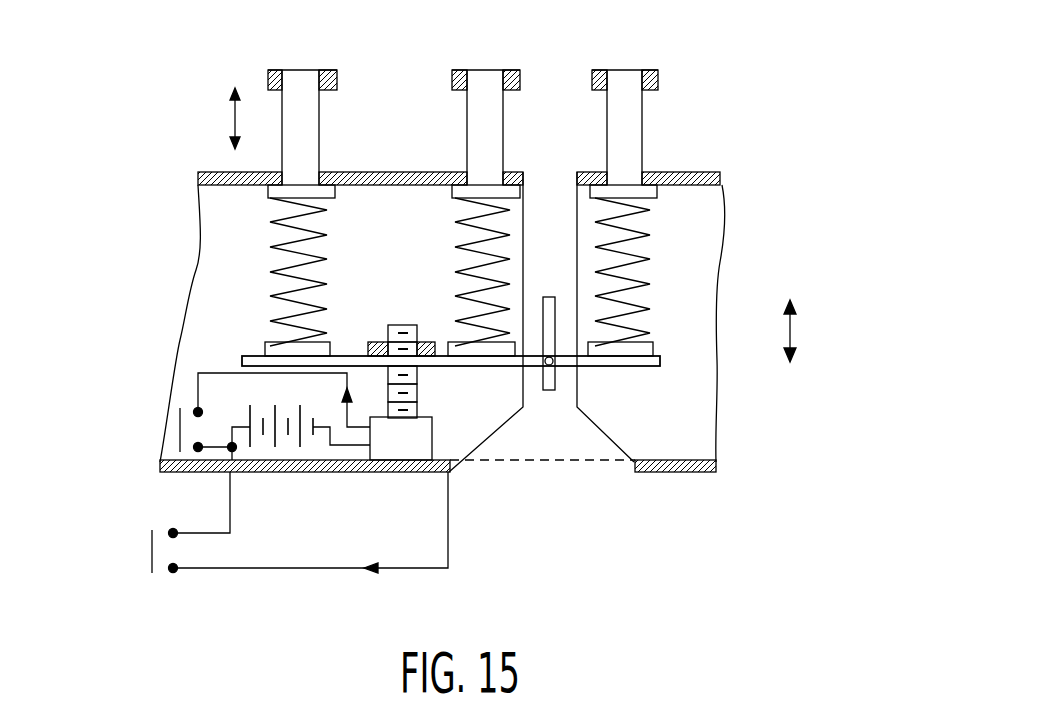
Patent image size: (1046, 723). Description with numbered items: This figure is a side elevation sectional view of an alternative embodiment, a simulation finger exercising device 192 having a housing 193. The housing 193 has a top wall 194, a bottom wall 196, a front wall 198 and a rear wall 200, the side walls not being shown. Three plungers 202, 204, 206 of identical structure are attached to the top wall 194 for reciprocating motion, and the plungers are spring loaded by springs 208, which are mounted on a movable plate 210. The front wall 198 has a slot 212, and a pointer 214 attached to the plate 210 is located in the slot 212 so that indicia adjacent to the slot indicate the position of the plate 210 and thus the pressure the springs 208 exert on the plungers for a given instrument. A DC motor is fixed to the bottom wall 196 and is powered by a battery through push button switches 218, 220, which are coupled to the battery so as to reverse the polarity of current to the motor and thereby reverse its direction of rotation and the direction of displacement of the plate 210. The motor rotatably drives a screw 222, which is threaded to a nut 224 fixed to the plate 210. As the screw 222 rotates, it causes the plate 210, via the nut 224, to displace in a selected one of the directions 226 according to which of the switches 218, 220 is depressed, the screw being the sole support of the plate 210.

The simulation finger exercising device 192 is at (145, 208).
The housing 193 is at (740, 221).
The top wall 194 is at (702, 172).
The bottom wall 196 is at (717, 465).
The front wall 198 is at (570, 455).
The rear wall 200 is at (705, 430).
The plunger 202 is at (268, 80).
The plunger 204 is at (452, 82).
The plunger 206 is at (660, 74).
The springs 208 is at (270, 277).
The movable plate 210 is at (660, 360).
The slot 212 is at (548, 297).
The pointer 214 is at (548, 390).
The push button switch 218 is at (180, 437).
The push button switch 220 is at (152, 558).
The screw 222 is at (417, 397).
The nut 224 is at (378, 342).
The directions 226 is at (795, 333).